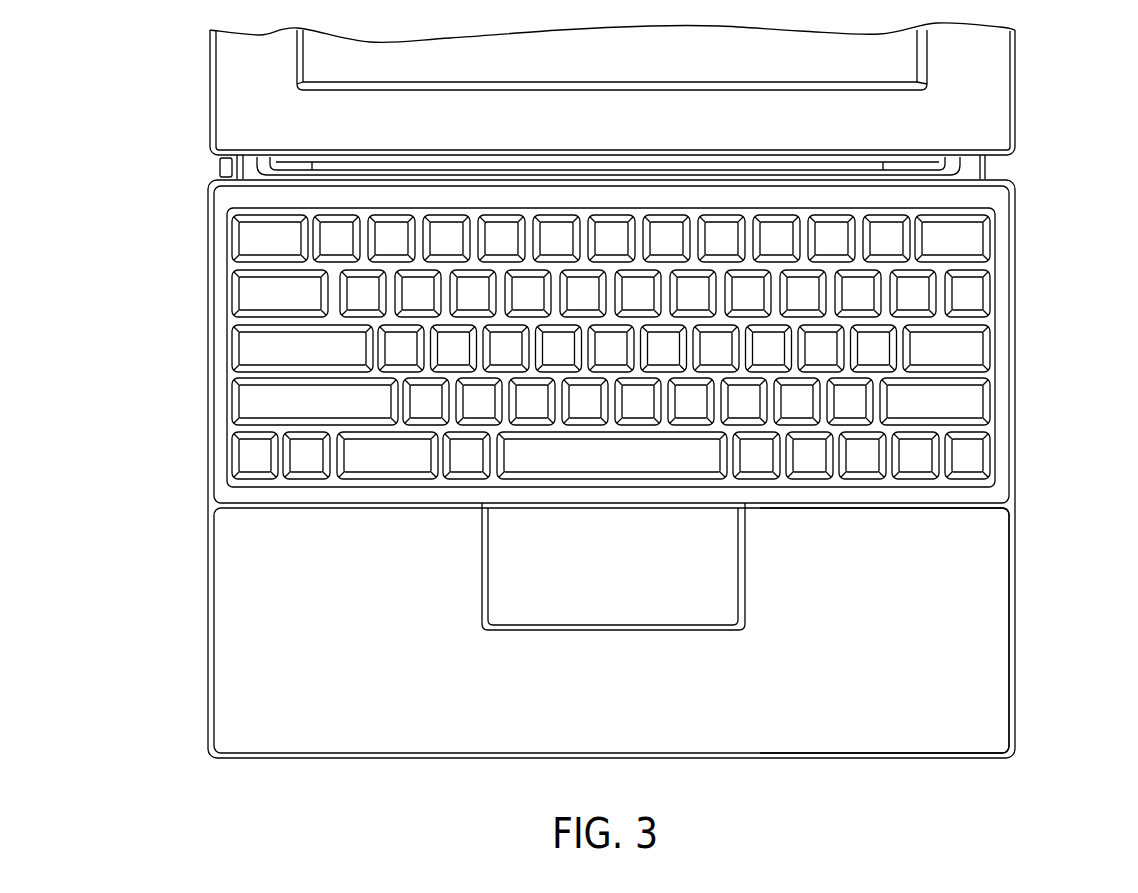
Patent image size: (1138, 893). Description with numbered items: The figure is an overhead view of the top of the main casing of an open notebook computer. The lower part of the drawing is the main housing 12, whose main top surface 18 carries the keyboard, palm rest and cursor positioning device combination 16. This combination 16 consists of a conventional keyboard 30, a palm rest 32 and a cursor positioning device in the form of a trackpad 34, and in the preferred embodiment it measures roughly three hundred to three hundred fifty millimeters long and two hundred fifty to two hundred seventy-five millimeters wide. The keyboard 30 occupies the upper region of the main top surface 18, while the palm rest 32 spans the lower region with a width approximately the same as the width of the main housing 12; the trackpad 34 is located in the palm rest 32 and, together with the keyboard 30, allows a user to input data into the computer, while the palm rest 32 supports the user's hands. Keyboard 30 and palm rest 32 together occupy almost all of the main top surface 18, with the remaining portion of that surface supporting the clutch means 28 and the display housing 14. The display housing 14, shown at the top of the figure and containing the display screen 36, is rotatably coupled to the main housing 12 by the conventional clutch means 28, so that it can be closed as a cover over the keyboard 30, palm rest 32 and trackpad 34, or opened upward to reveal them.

The main housing 12 is at (209, 705).
The display housing 14 is at (178, 79).
The keyboard, palm rest and cursor positioning device combination 16 is at (292, 612).
The main top surface 18 is at (1017, 520).
The clutch means 28 is at (218, 167).
The keyboard 30 is at (240, 292).
The palm rest 32 is at (875, 655).
The trackpad 34 is at (625, 577).
The display screen 36 is at (694, 65).